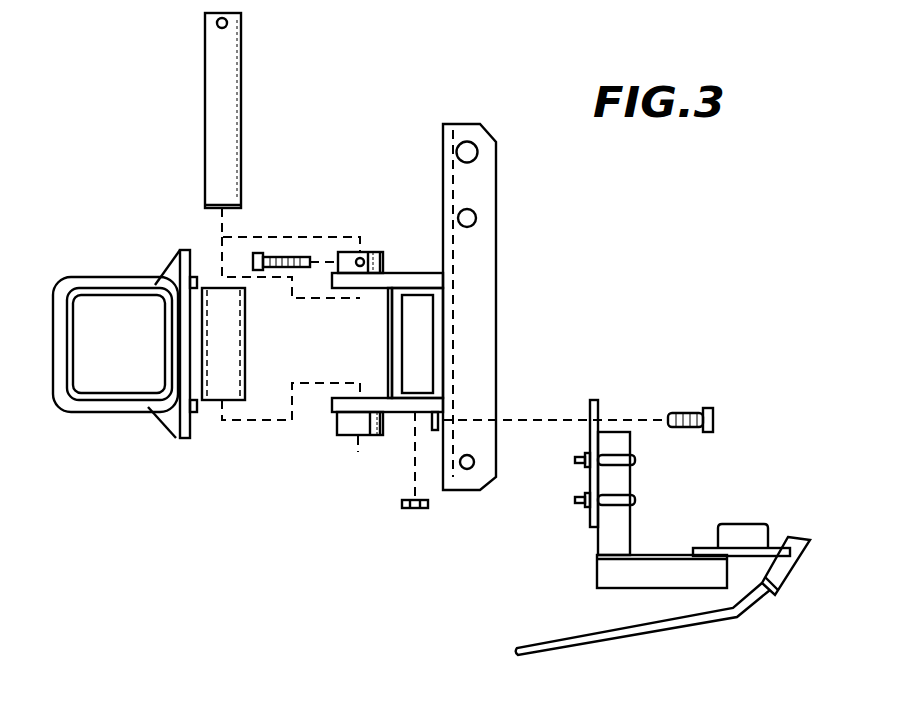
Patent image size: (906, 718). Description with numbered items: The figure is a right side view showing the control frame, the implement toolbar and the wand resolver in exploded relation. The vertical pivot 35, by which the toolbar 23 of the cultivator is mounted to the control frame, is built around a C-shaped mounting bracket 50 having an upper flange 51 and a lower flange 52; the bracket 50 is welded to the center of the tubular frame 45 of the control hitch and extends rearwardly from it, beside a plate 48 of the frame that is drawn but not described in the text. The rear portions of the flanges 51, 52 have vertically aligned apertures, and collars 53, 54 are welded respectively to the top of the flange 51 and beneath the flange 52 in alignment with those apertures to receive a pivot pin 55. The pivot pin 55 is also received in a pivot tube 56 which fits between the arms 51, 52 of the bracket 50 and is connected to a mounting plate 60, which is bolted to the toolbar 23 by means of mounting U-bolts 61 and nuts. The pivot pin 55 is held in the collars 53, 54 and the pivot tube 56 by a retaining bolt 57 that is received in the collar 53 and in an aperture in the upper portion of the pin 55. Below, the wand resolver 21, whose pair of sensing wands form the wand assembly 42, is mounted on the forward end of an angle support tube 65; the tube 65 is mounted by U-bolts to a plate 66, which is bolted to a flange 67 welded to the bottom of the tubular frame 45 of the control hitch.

The wand resolver 21 is at (663, 532).
The toolbar 23 is at (105, 395).
The vertical pivot 35 is at (318, 132).
The wand assembly 42 is at (788, 605).
The tubular frame 45 is at (404, 346).
The mounting plate 48 is at (497, 268).
The C-shaped mounting bracket 50 is at (362, 333).
The upper flange 51 is at (387, 288).
The lower flange 52 is at (392, 413).
The collar 53 is at (374, 252).
The collar 54 is at (333, 420).
The pivot pin 55 is at (241, 66).
The pivot tube 56 is at (268, 305).
The retaining bolt 57 is at (250, 250).
The mounting plate 60 is at (186, 248).
The mounting U-bolts 61 is at (109, 347).
The angle support tube 65 is at (660, 548).
The plate 66 is at (589, 518).
The flange 67 is at (427, 433).